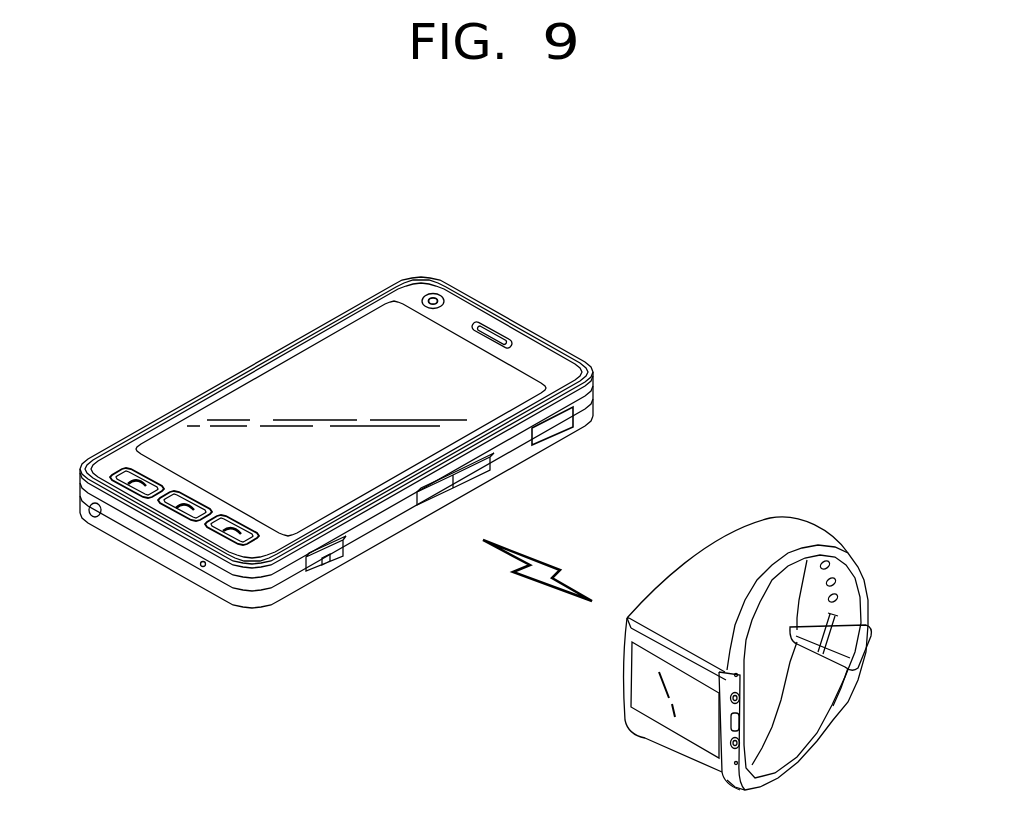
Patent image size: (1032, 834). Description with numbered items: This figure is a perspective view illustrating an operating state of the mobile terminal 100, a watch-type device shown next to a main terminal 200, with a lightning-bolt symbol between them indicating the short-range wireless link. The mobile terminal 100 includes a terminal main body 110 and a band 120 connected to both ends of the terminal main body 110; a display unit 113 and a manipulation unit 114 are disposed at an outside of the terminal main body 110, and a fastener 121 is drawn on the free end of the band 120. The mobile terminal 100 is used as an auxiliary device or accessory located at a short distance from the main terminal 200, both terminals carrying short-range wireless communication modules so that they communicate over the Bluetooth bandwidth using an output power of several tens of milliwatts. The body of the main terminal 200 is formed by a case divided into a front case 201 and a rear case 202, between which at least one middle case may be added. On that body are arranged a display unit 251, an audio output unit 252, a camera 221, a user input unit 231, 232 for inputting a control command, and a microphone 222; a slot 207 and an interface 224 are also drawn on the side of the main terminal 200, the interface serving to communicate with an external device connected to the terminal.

The mobile terminal 100 is at (802, 512).
The terminal main body 110 is at (638, 636).
The display unit 113 is at (637, 693).
The manipulation unit 114 is at (743, 743).
The band 120 is at (730, 549).
The fastener 121 is at (870, 648).
The main terminal 200 is at (352, 262).
The front case 201 is at (592, 392).
The rear case 202 is at (592, 408).
The slot 207 is at (551, 428).
The camera 221 is at (437, 297).
The microphone 222 is at (202, 570).
The interface unit 224 is at (82, 517).
The user input unit 231 is at (220, 537).
The user input unit 232 is at (431, 498).
The display unit 251 is at (307, 368).
The audio output unit 252 is at (495, 333).